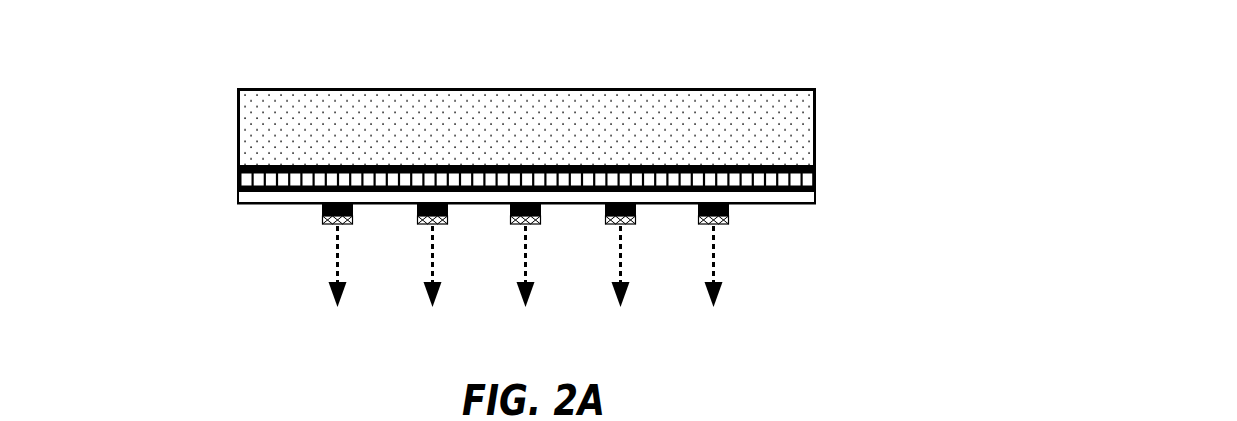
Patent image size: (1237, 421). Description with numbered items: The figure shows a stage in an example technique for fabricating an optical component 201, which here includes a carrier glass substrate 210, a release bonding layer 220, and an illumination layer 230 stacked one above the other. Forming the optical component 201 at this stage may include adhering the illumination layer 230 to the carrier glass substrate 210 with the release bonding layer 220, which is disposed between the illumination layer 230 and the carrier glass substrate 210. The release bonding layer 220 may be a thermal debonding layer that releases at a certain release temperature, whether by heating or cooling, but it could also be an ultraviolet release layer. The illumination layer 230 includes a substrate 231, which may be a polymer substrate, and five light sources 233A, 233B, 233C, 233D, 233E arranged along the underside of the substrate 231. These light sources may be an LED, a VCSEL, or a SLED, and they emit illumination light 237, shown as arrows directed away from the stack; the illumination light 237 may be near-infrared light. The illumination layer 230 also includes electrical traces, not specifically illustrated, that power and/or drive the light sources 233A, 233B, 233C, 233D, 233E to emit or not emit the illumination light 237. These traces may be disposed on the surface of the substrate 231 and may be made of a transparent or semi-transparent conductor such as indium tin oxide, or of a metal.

The optical component 201 is at (772, 23).
The carrier glass substrate 210 is at (472, 141).
The release bonding layer 220 is at (833, 175).
The illumination layer 230 is at (823, 193).
The substrate 231 is at (221, 197).
The light source 233A is at (322, 224).
The light source 233B is at (417, 224).
The light source 233C is at (510, 224).
The light source 233D is at (605, 224).
The light source 233E is at (698, 224).
The illumination light 237 is at (528, 283).